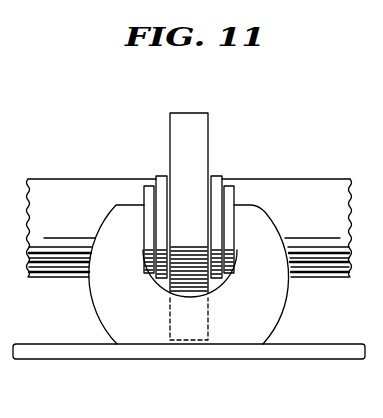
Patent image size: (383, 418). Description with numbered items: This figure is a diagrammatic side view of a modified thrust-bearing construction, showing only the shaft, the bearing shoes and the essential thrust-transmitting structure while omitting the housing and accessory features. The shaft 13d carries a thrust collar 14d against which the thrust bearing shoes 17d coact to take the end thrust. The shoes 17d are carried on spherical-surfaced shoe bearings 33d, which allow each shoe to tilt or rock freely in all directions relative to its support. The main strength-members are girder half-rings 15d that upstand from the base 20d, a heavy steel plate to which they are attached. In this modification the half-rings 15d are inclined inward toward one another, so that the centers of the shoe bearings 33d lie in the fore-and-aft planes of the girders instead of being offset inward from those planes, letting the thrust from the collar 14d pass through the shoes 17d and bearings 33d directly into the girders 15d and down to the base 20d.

The shaft 13d is at (58, 180).
The thrust collar 14d is at (232, 92).
The girder half-ring 15d is at (273, 303).
The thrust bearing shoe 17d is at (160, 178).
The base 20d is at (193, 348).
The shoe bearing 33d is at (143, 228).